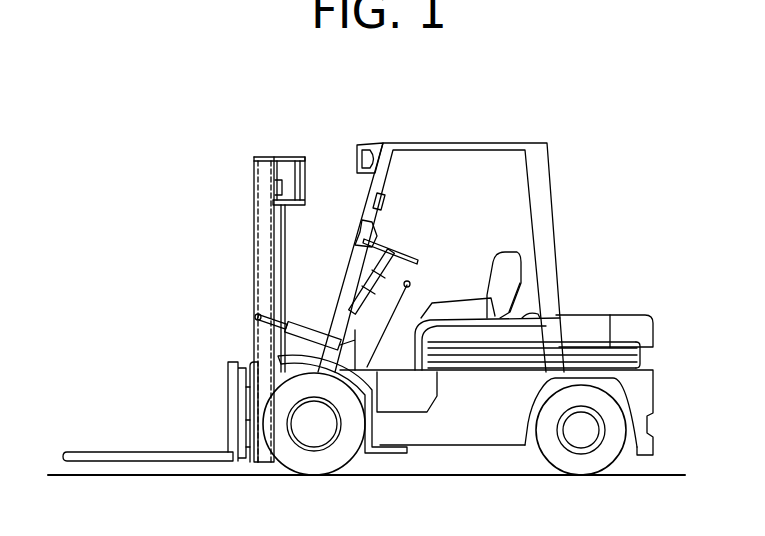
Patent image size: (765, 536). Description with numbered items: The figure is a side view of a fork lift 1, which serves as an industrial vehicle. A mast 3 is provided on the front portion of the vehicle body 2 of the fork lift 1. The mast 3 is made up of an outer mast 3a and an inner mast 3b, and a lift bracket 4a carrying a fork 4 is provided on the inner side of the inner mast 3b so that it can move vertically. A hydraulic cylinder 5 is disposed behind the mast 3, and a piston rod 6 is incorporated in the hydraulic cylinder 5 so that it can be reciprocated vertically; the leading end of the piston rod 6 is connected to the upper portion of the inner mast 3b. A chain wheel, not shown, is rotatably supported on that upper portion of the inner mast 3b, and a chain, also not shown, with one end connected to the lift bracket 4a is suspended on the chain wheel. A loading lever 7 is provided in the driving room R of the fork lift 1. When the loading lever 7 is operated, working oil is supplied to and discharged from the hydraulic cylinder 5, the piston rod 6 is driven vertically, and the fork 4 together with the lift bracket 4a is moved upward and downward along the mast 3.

The fork lift 1 is at (358, 306).
The vehicle body 2 is at (463, 440).
The mast 3 is at (243, 278).
The outer mast 3a is at (254, 188).
The inner mast 3b is at (254, 160).
The fork 4 is at (124, 452).
The lift bracket 4a is at (250, 372).
The hydraulic cylinder 5 is at (283, 220).
The piston rod 6 is at (280, 183).
The loading lever 7 is at (365, 256).
The driving room R is at (456, 170).